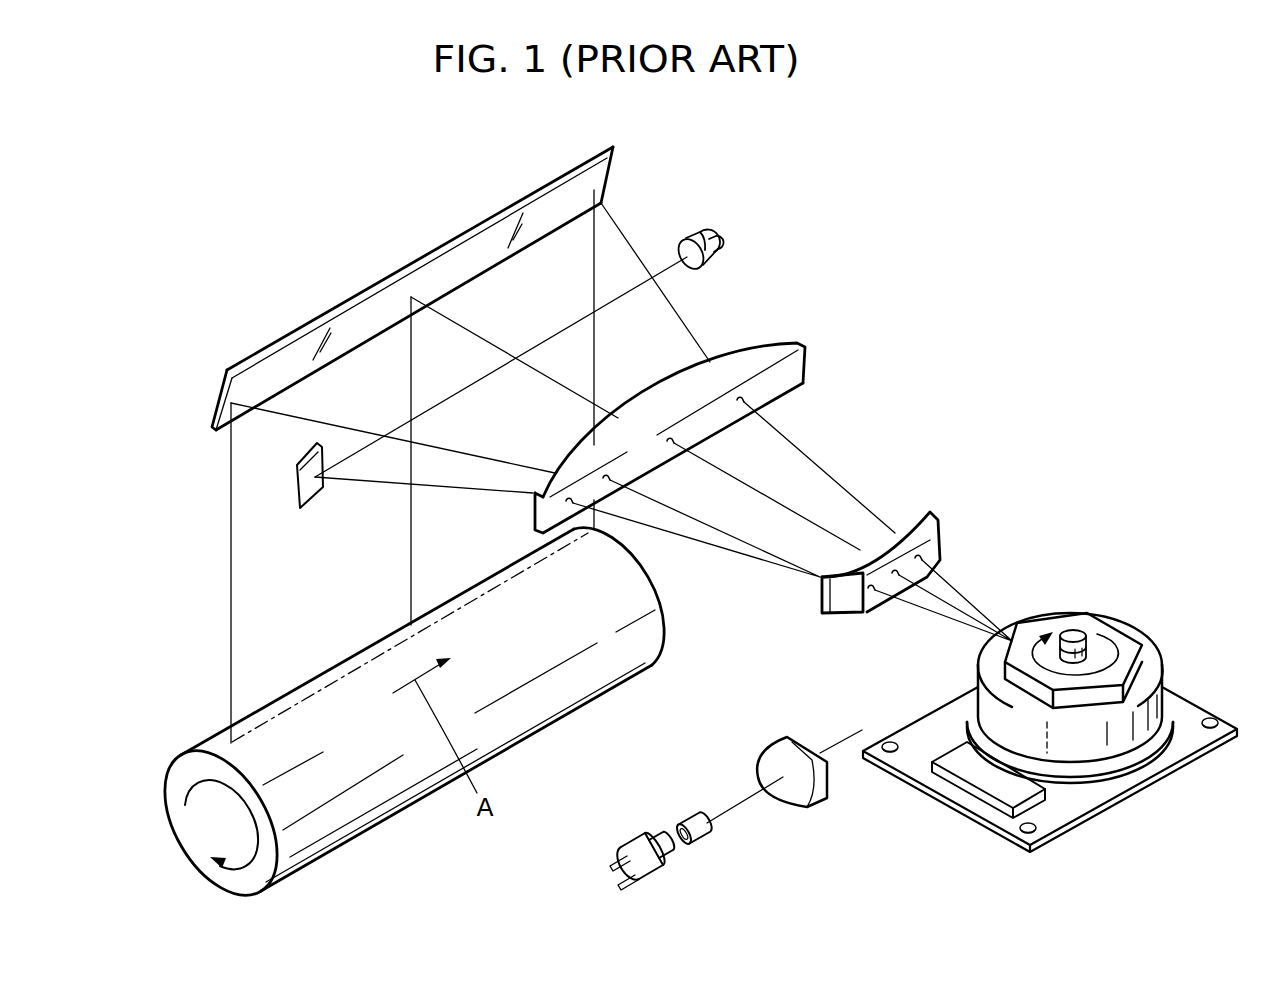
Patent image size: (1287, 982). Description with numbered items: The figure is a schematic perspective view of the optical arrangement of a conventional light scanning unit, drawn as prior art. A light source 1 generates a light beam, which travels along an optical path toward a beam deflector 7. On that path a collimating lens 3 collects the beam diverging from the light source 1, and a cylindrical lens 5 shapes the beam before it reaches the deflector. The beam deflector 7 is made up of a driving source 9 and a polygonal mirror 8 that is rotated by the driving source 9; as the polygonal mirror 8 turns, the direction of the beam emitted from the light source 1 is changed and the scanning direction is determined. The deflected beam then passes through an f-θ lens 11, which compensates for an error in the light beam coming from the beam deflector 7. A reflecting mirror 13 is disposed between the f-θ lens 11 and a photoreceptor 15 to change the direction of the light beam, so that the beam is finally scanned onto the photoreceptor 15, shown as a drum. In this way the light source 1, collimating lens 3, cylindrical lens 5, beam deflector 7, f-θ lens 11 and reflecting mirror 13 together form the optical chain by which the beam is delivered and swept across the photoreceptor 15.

The light source 1 is at (653, 838).
The collimating lens 3 is at (692, 817).
The cylindrical lens 5 is at (783, 738).
The beam deflector 7 is at (1050, 682).
The polygonal mirror 8 is at (1123, 644).
The driving source 9 is at (1155, 667).
The f-θ lens 11 is at (826, 362).
The reflecting mirror 13 is at (612, 173).
The photoreceptor 15 is at (325, 670).